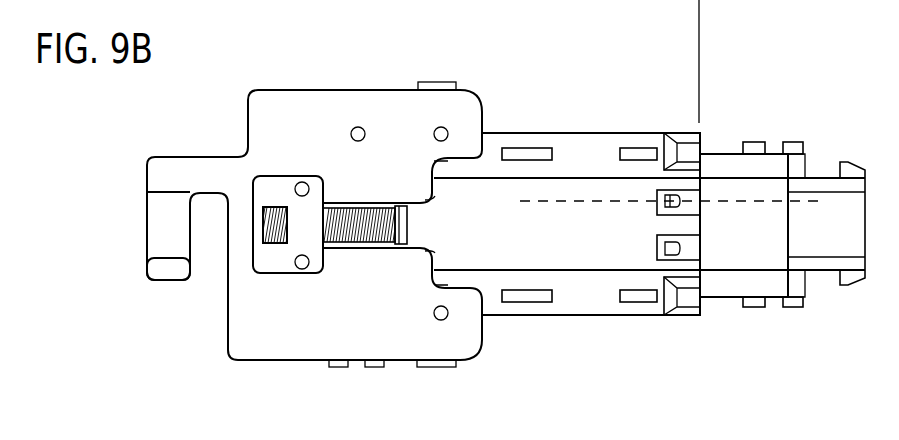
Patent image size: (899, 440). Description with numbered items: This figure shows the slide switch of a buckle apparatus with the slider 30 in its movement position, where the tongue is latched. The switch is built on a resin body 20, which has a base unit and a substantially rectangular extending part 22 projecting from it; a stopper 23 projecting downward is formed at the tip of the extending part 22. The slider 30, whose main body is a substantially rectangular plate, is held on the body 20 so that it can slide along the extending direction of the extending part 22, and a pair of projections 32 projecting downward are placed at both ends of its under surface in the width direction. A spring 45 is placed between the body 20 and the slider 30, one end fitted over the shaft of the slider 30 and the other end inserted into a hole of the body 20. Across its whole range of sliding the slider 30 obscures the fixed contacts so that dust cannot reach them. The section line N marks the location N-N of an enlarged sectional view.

The body 20 is at (294, 88).
The extending part 22 is at (722, 152).
The stopper 23 is at (783, 290).
The slider 30 is at (591, 318).
The projections 32 is at (700, 300).
The spring 45 is at (357, 237).
The section N- N is at (527, 190).